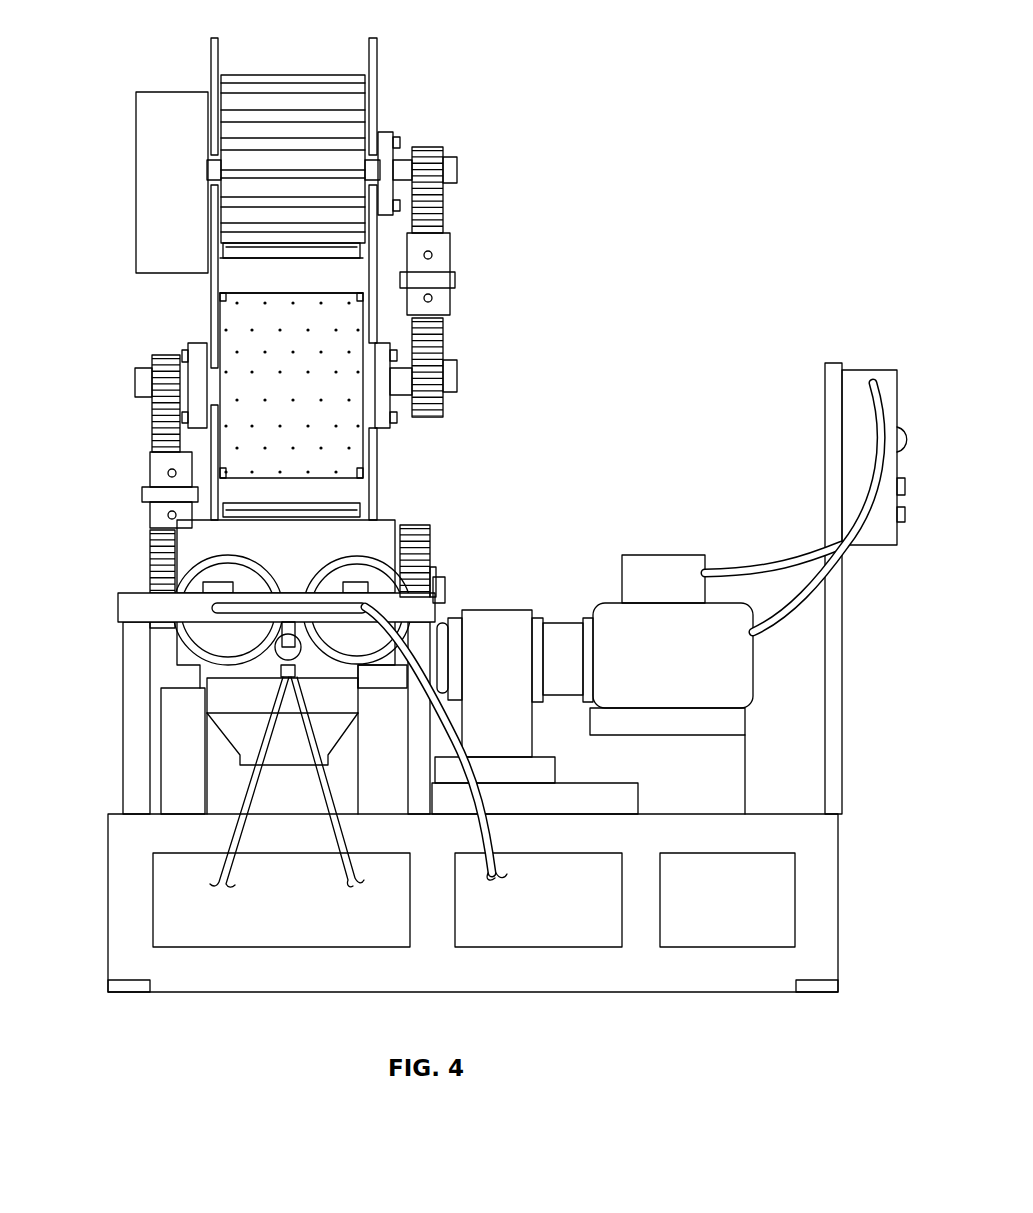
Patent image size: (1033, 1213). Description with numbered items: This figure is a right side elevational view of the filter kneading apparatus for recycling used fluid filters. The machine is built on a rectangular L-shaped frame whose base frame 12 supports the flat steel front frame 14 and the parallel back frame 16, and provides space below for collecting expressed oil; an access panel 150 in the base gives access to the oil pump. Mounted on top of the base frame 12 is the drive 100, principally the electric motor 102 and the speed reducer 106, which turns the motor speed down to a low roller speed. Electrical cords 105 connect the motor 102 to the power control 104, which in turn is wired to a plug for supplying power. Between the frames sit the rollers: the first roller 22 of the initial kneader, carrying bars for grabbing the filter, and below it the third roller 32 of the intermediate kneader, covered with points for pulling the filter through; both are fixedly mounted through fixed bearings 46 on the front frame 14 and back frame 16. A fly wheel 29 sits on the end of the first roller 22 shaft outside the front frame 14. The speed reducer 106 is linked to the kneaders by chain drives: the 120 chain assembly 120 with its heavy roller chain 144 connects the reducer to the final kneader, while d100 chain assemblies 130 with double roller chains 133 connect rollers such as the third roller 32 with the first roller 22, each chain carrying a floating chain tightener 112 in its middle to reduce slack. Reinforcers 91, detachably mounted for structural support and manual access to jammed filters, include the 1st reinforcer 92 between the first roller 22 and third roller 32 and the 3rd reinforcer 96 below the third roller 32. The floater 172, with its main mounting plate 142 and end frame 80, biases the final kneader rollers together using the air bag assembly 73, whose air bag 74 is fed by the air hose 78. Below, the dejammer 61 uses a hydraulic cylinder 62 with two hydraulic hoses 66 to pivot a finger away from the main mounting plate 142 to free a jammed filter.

The base frame 12 is at (125, 835).
The front frame 14 is at (214, 38).
The back frame 16 is at (374, 38).
The first roller 22 is at (283, 104).
The fly wheel 29 is at (152, 170).
The third roller 32 is at (233, 322).
The fixed bearing 46 is at (384, 137).
The dejammer 61 is at (285, 822).
The hydraulic cylinder 62 is at (285, 652).
The hydraulic hoses 66 is at (228, 868).
The air bag assembly 73 is at (205, 587).
The air bag 74 is at (175, 640).
The air hose 78 is at (492, 870).
The end frame 80 is at (420, 607).
The reinforcer 91 is at (182, 302).
The 1st reinforcer 92 is at (232, 270).
The 3rd reinforcer 96 is at (345, 490).
The drive 100 is at (690, 352).
The electric motor 102 is at (670, 562).
The power control 104 is at (887, 372).
The electrical cords 105 is at (855, 565).
The speed reducer 106 is at (508, 617).
The floating chain tightener 112 is at (443, 253).
The 120 chain assembly 120 is at (448, 553).
The d100 chain assembly 130 is at (512, 247).
The d100 double roller chain 133 is at (432, 205).
The main mounting plate 142 is at (372, 535).
The 120 heavy roller chain 144 is at (423, 532).
The access panel 150 is at (230, 678).
The floater 172 is at (118, 608).